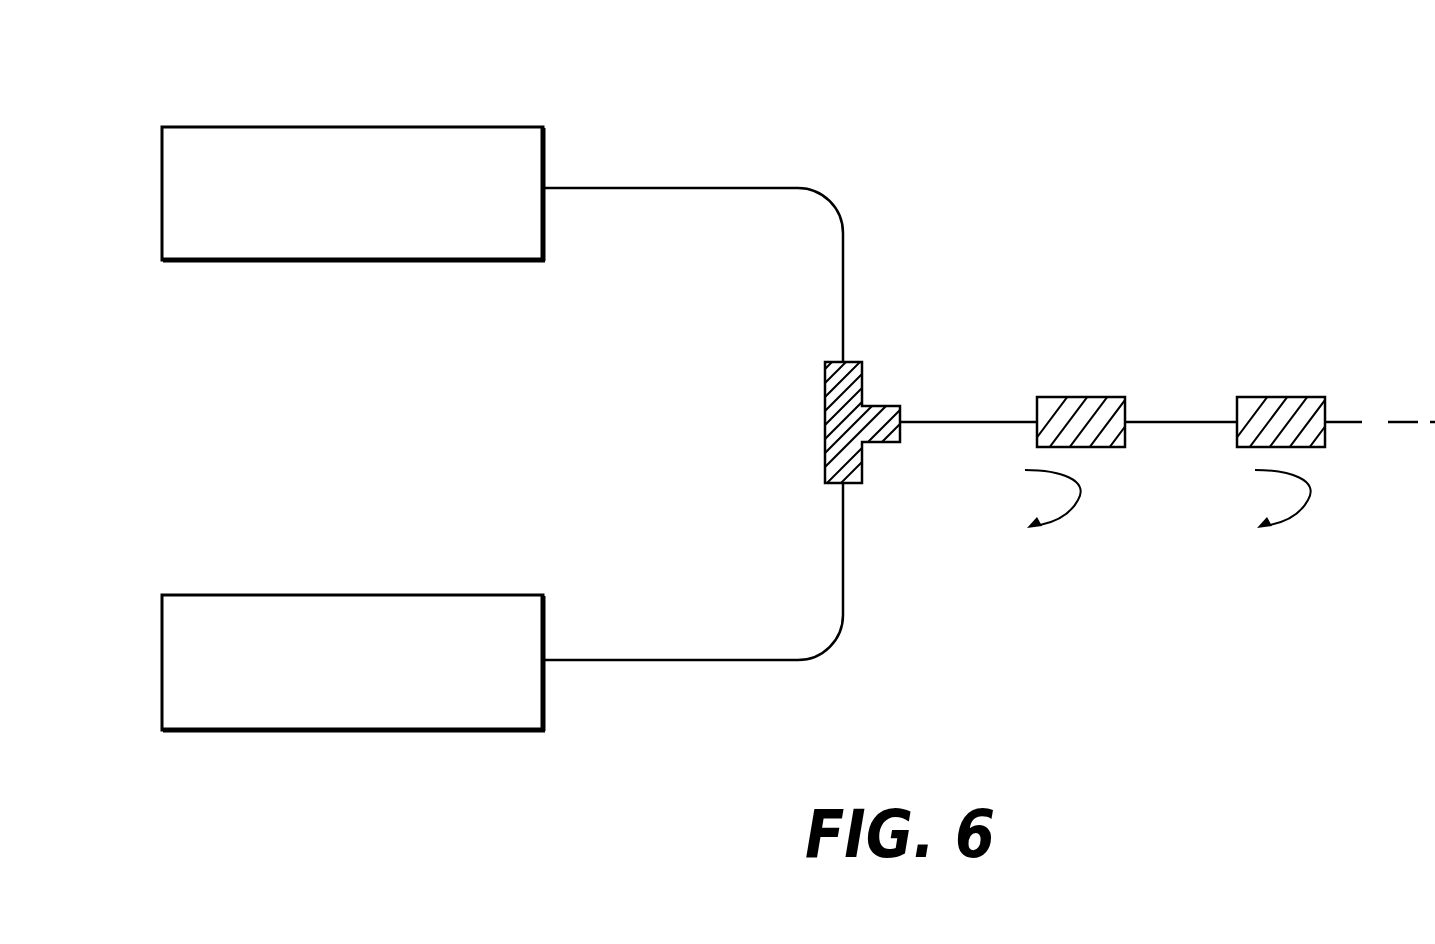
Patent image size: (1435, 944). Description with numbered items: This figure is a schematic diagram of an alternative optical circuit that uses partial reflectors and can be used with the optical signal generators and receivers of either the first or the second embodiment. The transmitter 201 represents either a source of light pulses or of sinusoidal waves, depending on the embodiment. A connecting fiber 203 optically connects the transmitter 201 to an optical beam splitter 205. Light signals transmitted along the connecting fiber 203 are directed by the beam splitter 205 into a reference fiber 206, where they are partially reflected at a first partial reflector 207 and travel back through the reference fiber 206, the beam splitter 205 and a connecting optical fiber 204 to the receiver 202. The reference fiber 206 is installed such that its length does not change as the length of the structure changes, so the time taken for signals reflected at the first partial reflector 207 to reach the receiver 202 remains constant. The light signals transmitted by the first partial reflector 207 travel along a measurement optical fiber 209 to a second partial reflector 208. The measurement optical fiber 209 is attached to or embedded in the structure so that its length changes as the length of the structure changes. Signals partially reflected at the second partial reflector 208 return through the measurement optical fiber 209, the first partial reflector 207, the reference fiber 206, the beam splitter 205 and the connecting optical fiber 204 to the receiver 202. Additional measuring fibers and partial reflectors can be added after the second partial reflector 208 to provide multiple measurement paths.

The transmitter 201 is at (433, 127).
The receiver 202 is at (427, 730).
The connecting fiber 203 is at (732, 188).
The connecting optical fiber 204 is at (742, 660).
The optical beam splitter 205 is at (825, 445).
The reference fiber 206 is at (1013, 422).
The first partial reflector 207 is at (1072, 397).
The second partial reflector 208 is at (1273, 397).
The measurement optical fiber 209 is at (1178, 422).